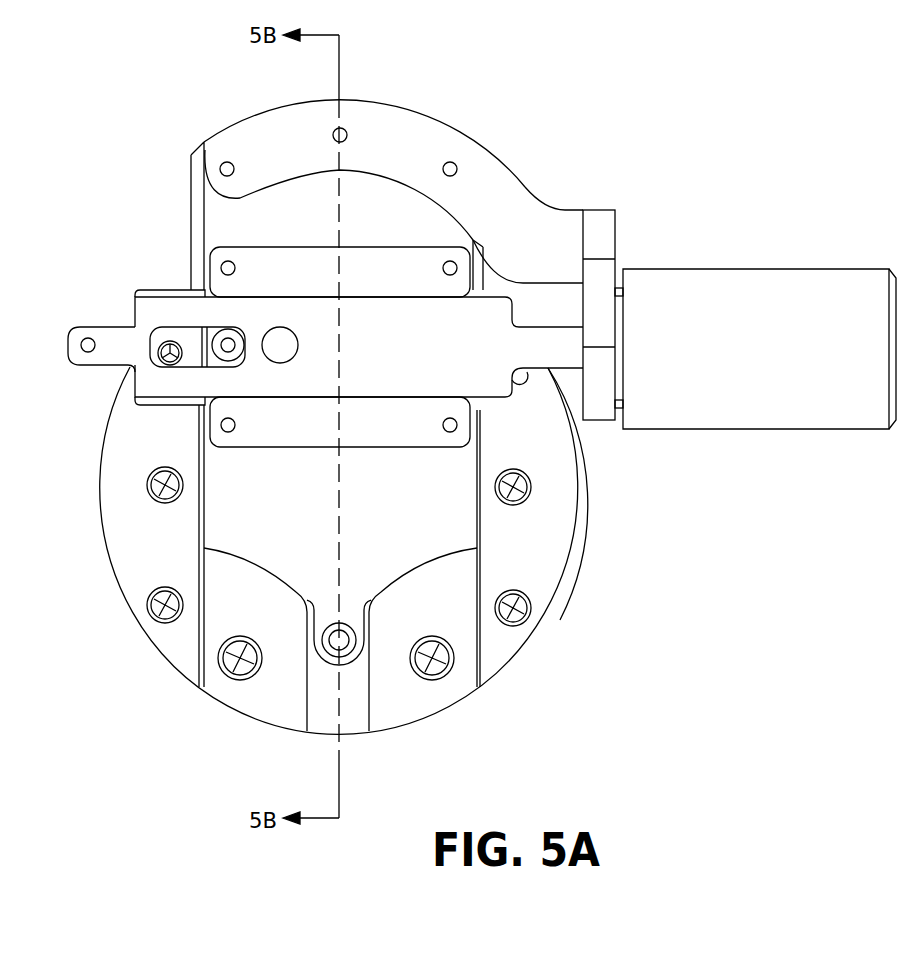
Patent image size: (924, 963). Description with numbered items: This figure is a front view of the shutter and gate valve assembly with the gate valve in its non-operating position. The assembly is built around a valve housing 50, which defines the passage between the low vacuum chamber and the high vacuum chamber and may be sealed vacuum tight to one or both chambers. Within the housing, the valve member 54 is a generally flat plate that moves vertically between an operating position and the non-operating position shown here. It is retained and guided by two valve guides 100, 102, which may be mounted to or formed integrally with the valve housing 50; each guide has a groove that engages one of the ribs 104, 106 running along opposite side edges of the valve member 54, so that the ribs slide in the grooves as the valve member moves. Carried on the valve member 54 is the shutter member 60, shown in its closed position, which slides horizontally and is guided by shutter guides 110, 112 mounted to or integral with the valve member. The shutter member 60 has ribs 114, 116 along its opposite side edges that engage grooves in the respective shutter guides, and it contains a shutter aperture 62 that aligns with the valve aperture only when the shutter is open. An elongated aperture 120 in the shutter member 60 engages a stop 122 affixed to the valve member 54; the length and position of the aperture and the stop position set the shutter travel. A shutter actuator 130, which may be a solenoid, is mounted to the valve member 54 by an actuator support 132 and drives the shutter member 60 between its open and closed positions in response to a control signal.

The valve housing 50 is at (260, 708).
The valve member 54 is at (400, 572).
The shutter member 60 is at (378, 375).
The shutter aperture 62 is at (280, 367).
The valve guide 100 is at (127, 575).
The valve guide 102 is at (548, 575).
The rib 104 is at (192, 208).
The rib 106 is at (477, 262).
The shutter guide 110 is at (302, 262).
The shutter guide 112 is at (232, 438).
The rib 114 is at (138, 290).
The rib 116 is at (150, 400).
The elongated aperture 120 is at (192, 337).
The stop 122 is at (228, 338).
The shutter actuator 130 is at (718, 268).
The actuator support 132 is at (401, 128).